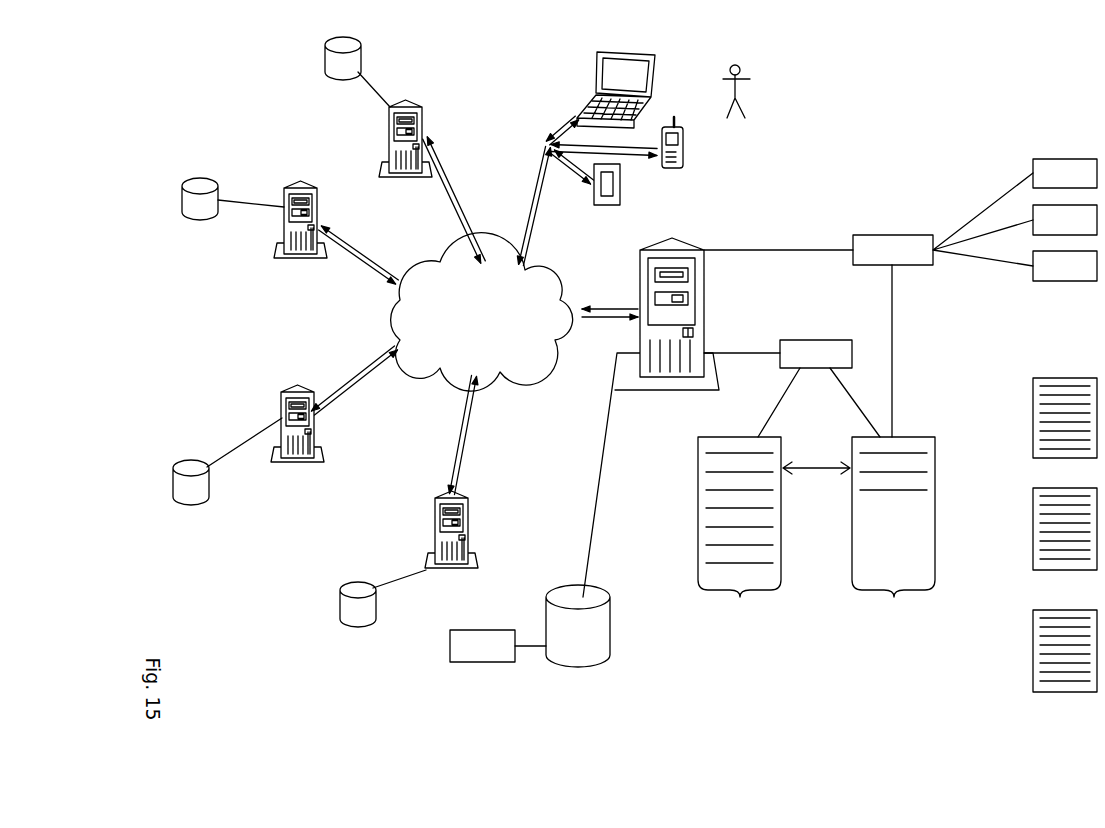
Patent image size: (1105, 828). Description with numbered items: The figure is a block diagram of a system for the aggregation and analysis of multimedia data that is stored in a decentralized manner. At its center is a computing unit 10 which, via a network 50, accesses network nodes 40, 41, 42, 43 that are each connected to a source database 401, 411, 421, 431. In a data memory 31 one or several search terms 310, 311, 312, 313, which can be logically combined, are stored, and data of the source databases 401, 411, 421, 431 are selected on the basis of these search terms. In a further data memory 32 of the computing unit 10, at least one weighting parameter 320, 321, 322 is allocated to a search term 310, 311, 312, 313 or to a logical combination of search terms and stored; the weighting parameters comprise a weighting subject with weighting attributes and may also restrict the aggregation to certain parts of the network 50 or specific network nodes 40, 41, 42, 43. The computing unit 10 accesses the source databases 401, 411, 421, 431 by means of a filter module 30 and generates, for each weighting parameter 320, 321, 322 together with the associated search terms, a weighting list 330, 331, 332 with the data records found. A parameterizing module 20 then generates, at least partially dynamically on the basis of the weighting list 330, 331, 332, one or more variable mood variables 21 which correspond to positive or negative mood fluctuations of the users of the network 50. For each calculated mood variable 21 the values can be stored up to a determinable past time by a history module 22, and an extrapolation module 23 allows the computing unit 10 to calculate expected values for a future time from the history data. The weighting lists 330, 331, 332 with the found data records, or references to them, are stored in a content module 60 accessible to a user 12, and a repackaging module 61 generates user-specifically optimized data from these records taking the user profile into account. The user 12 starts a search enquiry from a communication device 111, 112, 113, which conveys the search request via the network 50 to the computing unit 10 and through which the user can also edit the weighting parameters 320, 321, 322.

The computing unit 10 is at (668, 240).
The user 12 is at (746, 70).
The parameterizing module 20 is at (943, 305).
The mood variable 21 is at (1065, 173).
The history module 22 is at (1065, 220).
The extrapolation module 23 is at (1065, 266).
The filter module 30 is at (819, 388).
The data memory 31 is at (774, 528).
The data memory 32 is at (893, 528).
The network node 40 is at (469, 525).
The network node 41 is at (314, 420).
The network node 42 is at (318, 200).
The network node 43 is at (389, 140).
The network 50 is at (482, 312).
The content module 60 is at (578, 626).
The repackaging module 61 is at (498, 646).
The communication device 111 is at (598, 60).
The communication device 112 is at (691, 101).
The communication device 113 is at (620, 184).
The search term 310 is at (720, 451).
The search term 311 is at (720, 469).
The search term 312 is at (720, 487).
The search term 313 is at (720, 505).
The weighting parameter 320 is at (1033, 387).
The weighting parameter 321 is at (1033, 497).
The weighting parameter 322 is at (1033, 620).
The weighting list 330 is at (1065, 406).
The weighting list 331 is at (1065, 518).
The weighting list 332 is at (1065, 640).
The source database 401 is at (340, 607).
The source database 411 is at (186, 462).
The source database 421 is at (200, 178).
The source database 431 is at (324, 52).